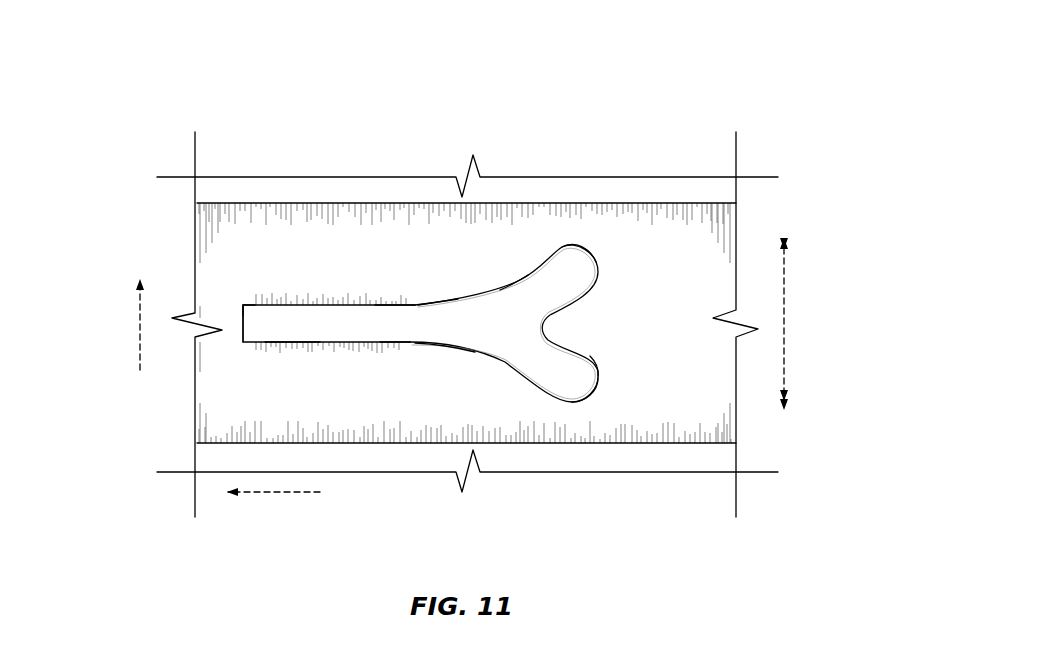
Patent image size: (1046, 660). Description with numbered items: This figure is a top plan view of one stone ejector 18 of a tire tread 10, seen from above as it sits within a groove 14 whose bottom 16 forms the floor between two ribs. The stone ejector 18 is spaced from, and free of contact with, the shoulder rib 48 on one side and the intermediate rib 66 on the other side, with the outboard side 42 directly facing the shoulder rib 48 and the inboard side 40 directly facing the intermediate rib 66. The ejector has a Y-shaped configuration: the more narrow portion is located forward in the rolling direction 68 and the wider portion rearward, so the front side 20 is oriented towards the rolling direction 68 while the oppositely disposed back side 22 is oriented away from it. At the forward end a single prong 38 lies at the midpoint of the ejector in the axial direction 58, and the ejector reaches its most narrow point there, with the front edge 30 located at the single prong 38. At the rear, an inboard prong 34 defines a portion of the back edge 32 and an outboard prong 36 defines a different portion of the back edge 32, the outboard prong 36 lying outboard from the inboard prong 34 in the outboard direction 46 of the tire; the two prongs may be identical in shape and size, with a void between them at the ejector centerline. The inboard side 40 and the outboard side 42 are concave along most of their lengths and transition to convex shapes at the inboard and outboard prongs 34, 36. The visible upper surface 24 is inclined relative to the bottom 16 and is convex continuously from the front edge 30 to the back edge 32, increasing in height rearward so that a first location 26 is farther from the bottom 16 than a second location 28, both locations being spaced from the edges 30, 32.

The tread 10 is at (697, 120).
The groove 14 is at (228, 393).
The bottom 16 is at (687, 403).
The stone ejector 18 is at (420, 332).
The front side 20 is at (242, 338).
The back side 22 is at (603, 275).
The upper surface 24 is at (345, 322).
The first location 26 is at (518, 287).
The second location 28 is at (390, 317).
The front edge 30 is at (242, 307).
The back edge 32 is at (600, 368).
The inboard prong 34 is at (577, 375).
The outboard prong 36 is at (575, 258).
The single prong 38 is at (287, 335).
The inboard side 40 is at (460, 352).
The outboard side 42 is at (435, 297).
The outboard direction 46 is at (140, 332).
The shoulder rib 48 is at (247, 188).
The axial direction 58 is at (784, 325).
The intermediate rib 66 is at (466, 488).
The rolling direction 68 is at (278, 493).